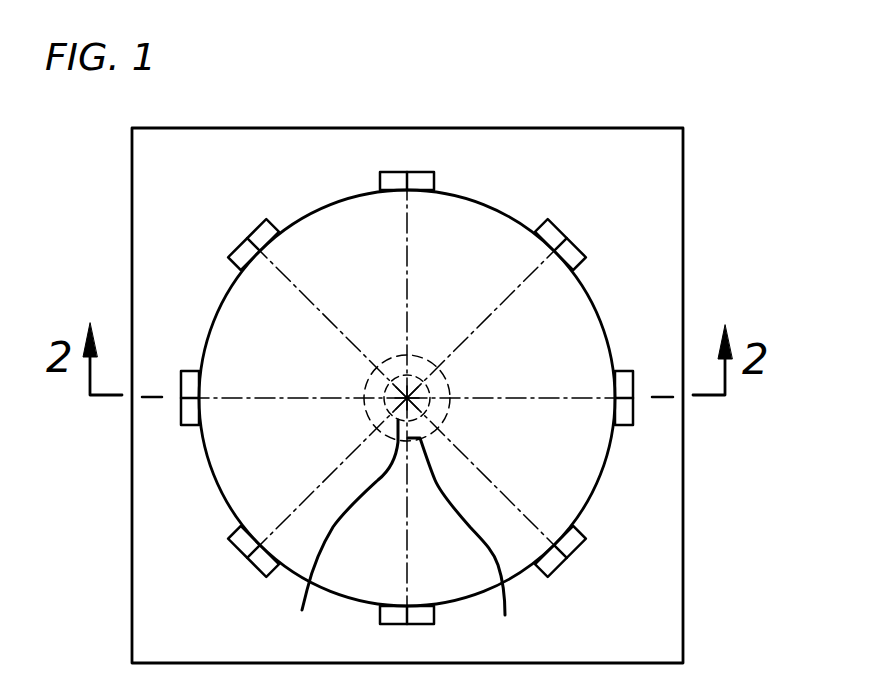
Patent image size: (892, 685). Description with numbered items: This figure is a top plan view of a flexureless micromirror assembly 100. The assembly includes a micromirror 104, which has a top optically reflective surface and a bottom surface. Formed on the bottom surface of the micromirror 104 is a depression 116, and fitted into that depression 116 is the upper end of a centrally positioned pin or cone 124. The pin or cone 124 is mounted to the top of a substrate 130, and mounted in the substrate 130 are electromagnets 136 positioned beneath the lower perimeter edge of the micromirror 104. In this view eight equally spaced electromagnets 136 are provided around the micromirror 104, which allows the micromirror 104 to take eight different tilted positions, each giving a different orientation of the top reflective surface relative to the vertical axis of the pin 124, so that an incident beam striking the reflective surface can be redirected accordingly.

The flexureless micromirror assembly 100 is at (692, 75).
The substrate 130 is at (305, 128).
The micromirror 104 is at (573, 338).
The electromagnets 136 is at (620, 425).
The pin or cone 124 is at (339, 532).
The depression 116 is at (463, 543).